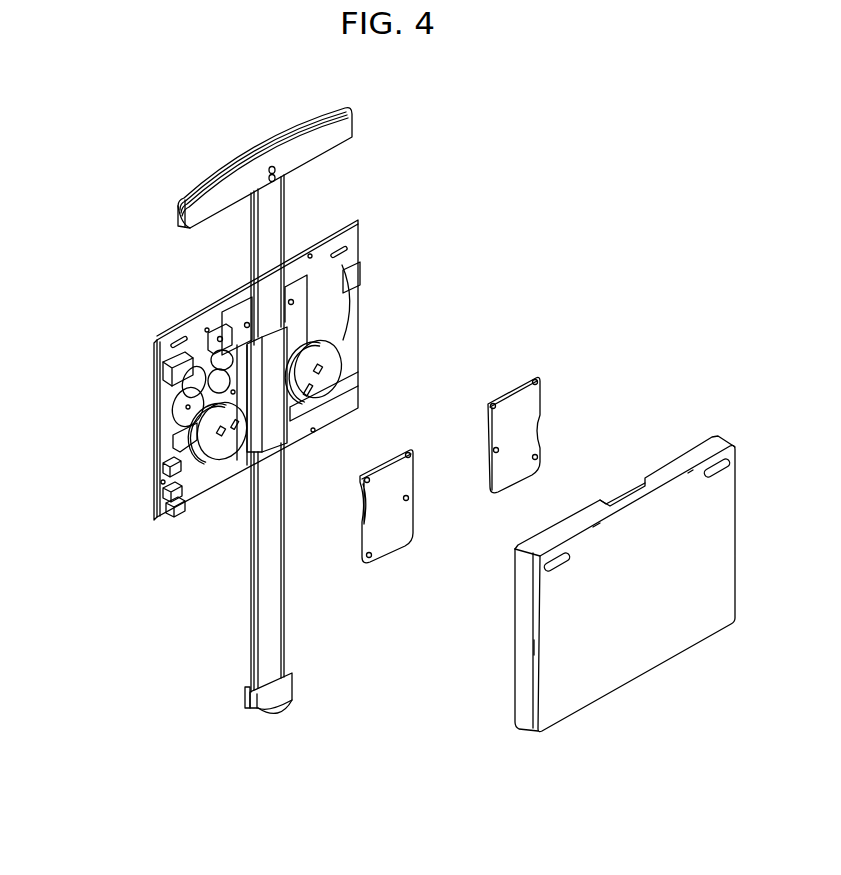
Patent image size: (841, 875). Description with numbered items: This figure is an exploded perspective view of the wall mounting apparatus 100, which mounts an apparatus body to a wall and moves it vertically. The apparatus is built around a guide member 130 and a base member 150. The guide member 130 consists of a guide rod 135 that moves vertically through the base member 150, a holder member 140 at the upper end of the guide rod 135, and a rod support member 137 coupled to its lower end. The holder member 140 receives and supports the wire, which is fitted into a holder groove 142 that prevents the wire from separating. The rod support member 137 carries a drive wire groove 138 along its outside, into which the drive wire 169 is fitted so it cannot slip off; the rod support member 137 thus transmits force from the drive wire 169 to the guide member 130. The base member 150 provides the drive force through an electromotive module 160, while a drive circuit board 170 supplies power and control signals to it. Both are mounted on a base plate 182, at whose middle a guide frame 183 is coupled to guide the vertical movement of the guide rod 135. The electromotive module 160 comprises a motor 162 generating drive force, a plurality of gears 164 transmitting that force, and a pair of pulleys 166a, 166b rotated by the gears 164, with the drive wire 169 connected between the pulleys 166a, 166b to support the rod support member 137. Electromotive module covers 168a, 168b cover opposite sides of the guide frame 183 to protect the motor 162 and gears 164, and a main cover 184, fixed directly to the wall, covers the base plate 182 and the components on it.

The wall mounting apparatus 100 is at (549, 243).
The guide member 130 is at (240, 248).
The guide rod 135 is at (277, 217).
The rod support member 137 is at (283, 690).
The drive wire groove 138 is at (247, 700).
The holder member 140 is at (346, 130).
The holder groove 142 is at (228, 170).
The base member 150 is at (145, 489).
The electromotive module 160 is at (158, 397).
The motor 162 is at (205, 343).
The gears 164 is at (173, 413).
The pulley 166a is at (216, 450).
The pulley 166b is at (333, 360).
The electromotive module cover 168a is at (388, 542).
The electromotive module cover 168b is at (525, 417).
The drive wire 169 is at (250, 613).
The drive circuit board 170 is at (190, 487).
The base plate 182 is at (163, 361).
The guide frame 183 is at (280, 423).
The main cover 184 is at (633, 653).